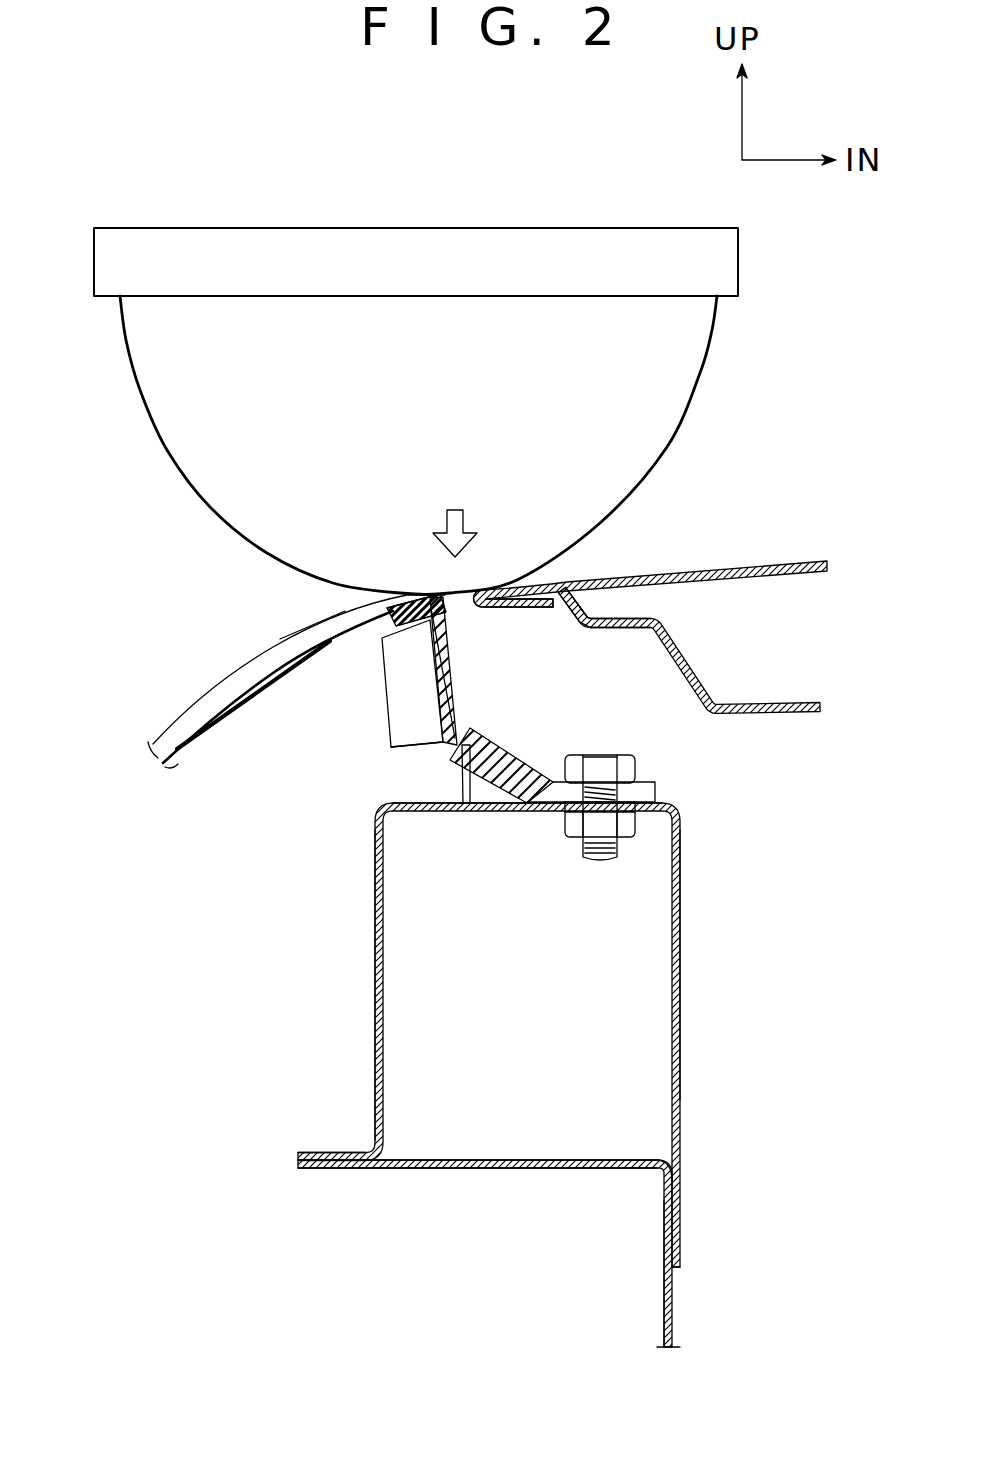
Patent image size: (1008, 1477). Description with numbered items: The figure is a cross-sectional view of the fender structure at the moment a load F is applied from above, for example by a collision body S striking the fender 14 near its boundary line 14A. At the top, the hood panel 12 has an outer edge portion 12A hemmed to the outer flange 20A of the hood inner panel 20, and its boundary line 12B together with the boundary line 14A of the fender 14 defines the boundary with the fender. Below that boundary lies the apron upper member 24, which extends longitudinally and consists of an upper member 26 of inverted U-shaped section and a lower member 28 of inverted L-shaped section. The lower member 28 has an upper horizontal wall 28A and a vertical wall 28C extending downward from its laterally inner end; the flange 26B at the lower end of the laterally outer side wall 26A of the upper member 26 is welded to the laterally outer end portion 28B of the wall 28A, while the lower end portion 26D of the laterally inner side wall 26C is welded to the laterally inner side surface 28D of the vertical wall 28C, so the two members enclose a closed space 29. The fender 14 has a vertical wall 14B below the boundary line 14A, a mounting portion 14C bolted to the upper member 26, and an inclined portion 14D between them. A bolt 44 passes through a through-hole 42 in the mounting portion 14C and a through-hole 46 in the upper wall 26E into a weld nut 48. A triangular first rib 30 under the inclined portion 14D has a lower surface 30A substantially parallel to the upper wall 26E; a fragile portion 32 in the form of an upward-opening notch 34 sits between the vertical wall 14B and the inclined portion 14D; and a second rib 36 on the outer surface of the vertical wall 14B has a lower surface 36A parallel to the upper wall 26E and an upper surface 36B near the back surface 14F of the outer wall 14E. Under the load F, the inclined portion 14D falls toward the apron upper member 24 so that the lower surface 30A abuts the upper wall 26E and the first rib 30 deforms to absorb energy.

The seat S is at (718, 365).
The hood panel 12 is at (770, 562).
The outer edge portion 12A is at (537, 605).
The boundary line 12B is at (485, 592).
The fender 14 is at (178, 724).
The boundary line 14A is at (455, 592).
The vertical wall 14B is at (455, 673).
The mounting portion 14C is at (650, 790).
The inclined portion 14D is at (597, 760).
The outer wall 14E is at (328, 612).
The back surface 14F is at (446, 636).
The hood inner panel 20 is at (790, 714).
The outer flange 20A is at (575, 622).
The apron upper member 24 is at (550, 1071).
The upper member 26 is at (678, 1043).
The laterally outer side wall 26A is at (375, 948).
The flange 26B is at (330, 1152).
The laterally inner side wall 26C is at (681, 930).
The lower end portion 26D is at (681, 1252).
The upper wall 26E is at (390, 805).
The lower member 28 is at (571, 1153).
The upper horizontal wall 28A is at (452, 1158).
The laterally outer end portion 28B is at (358, 1170).
The vertical wall 28C is at (675, 1338).
The laterally inner side surface 28D is at (675, 1178).
The space 29 is at (549, 1013).
The first rib 30 is at (460, 795).
The lower surface 30A is at (525, 803).
The fragile portion 32 is at (462, 781).
The notch 34 is at (472, 733).
The second rib 36 is at (382, 678).
The lower surface 36A is at (400, 746).
The upper surface 36B is at (374, 602).
The through-hole 42 is at (635, 832).
The bolt 44 is at (635, 757).
The through-hole 46 is at (573, 822).
The weld nut 48 is at (630, 835).
The load F is at (445, 528).